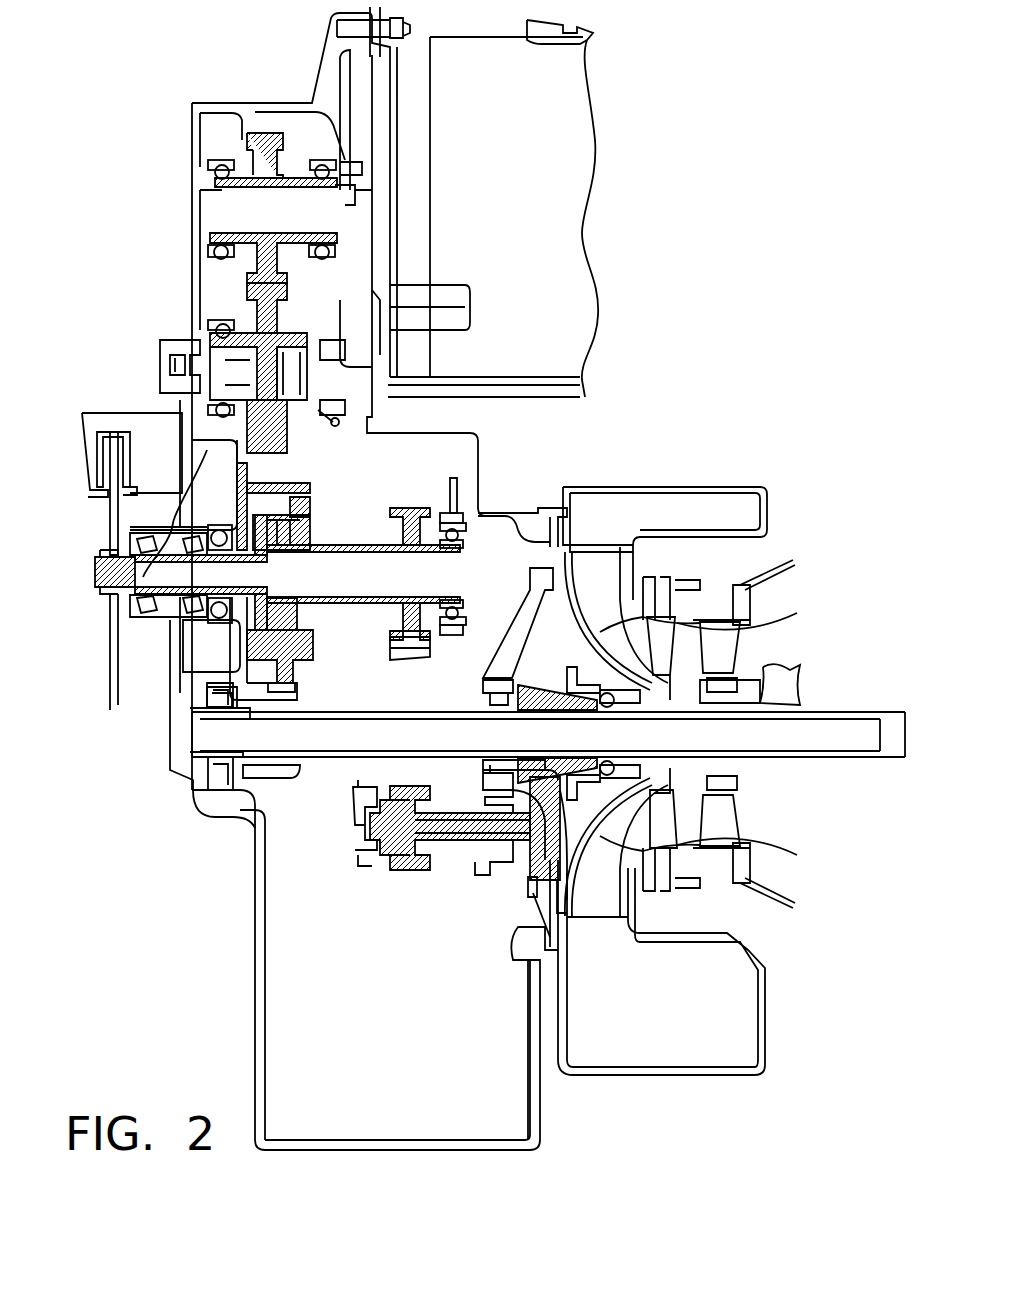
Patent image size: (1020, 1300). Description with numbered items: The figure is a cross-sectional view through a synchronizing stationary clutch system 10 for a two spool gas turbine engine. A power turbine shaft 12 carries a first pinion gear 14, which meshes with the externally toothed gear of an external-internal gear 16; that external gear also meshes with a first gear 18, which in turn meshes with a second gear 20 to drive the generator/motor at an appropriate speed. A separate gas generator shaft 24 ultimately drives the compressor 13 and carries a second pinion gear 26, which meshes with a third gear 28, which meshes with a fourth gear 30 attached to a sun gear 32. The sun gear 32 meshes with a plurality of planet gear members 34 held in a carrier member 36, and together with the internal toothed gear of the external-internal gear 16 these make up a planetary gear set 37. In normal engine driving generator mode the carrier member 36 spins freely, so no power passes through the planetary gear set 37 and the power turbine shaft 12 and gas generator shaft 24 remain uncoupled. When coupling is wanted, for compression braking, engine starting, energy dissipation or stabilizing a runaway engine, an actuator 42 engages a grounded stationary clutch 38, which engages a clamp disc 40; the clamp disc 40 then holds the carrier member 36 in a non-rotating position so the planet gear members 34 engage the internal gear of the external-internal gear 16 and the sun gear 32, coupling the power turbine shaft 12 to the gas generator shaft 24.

The synchronizing stationary clutch system 10 is at (167, 923).
The power turbine shaft 12 is at (215, 748).
The compressor 13 is at (800, 635).
The first pinion gear 14 is at (270, 775).
The external-internal gear 16 is at (298, 688).
The first gear 18 is at (248, 290).
The second gear 20 is at (248, 140).
The gas generator shaft 24 is at (765, 697).
The second pinion gear 26 is at (580, 777).
The third gear 28 is at (410, 862).
The fourth gear 30 is at (393, 550).
The sun gear 32 is at (290, 520).
The planet gear members 34 is at (300, 655).
The carrier member 36 is at (257, 563).
The planetary gear set 37 is at (96, 576).
The grounded stationary clutch 38 is at (106, 452).
The clamp disc 40 is at (112, 640).
The actuator 42 is at (118, 420).